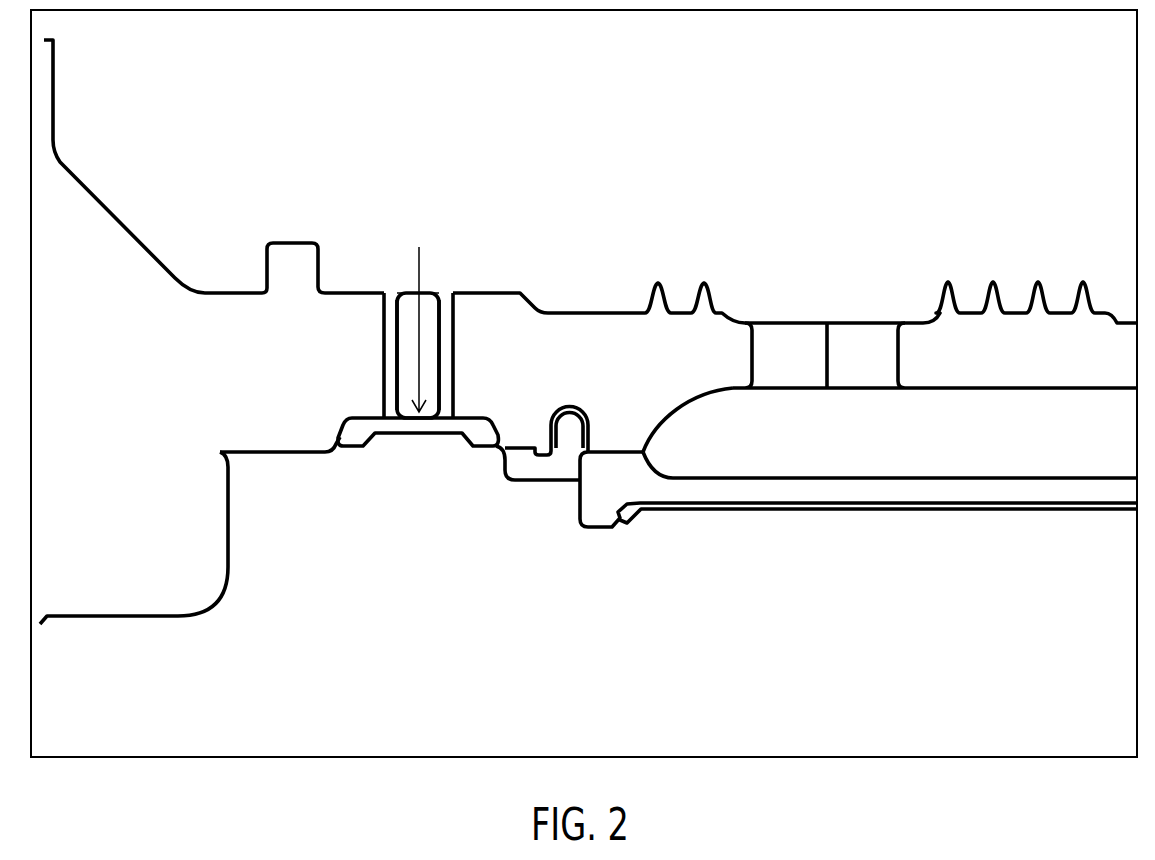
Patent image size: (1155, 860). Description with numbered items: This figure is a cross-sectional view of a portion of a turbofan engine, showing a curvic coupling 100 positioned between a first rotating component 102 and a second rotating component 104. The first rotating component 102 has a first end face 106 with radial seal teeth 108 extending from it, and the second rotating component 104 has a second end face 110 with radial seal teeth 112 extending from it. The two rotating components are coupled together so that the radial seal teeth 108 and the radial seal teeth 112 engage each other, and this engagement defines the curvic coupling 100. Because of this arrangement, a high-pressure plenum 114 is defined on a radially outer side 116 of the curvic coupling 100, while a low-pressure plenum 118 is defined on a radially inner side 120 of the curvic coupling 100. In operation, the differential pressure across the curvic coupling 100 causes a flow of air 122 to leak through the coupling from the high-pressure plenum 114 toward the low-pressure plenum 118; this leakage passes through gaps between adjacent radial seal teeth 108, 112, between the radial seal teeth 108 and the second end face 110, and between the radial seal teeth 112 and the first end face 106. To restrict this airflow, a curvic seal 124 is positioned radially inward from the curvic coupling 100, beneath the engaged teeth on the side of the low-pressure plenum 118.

The curvic coupling 100 is at (396, 256).
The first rotating component 102 is at (98, 390).
The second rotating component 104 is at (637, 377).
The first end face 106 is at (386, 370).
The radial seal teeth 108 is at (392, 310).
The second end face 110 is at (452, 365).
The radial seal teeth 112 is at (445, 307).
The high-pressure plenum 114 is at (637, 128).
The radially outer side 116 is at (455, 197).
The low-pressure plenum 118 is at (597, 672).
The radially inner side 120 is at (350, 506).
The flow of air 122 is at (419, 255).
The curvic seal 124 is at (430, 435).